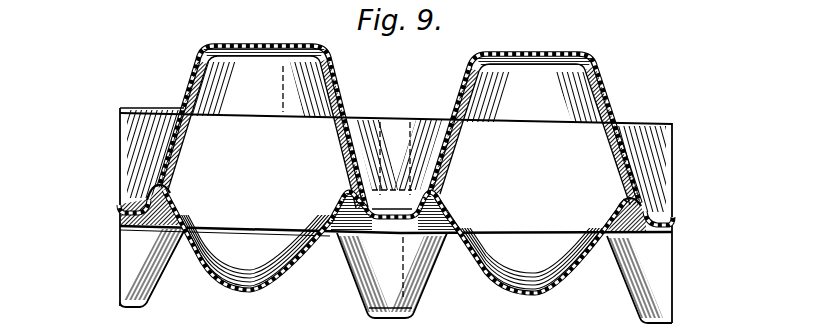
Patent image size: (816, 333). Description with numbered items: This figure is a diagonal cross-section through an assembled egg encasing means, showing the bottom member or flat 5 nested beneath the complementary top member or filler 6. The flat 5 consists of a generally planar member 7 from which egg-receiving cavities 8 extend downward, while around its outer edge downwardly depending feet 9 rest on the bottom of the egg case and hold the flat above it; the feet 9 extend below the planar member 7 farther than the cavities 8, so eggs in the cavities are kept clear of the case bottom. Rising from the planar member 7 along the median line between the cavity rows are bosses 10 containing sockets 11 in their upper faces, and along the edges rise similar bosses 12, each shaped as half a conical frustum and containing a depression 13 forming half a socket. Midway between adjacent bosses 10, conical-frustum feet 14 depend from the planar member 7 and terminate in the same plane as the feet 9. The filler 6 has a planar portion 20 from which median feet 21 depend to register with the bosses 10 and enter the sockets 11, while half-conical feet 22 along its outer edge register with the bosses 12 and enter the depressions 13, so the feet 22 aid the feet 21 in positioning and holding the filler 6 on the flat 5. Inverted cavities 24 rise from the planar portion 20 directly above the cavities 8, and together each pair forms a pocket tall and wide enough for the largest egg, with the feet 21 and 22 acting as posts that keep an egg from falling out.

The flat 5 is at (210, 281).
The filler 6 is at (204, 47).
The planar member 7 is at (531, 231).
The cavities 8 is at (267, 273).
The feet 9 is at (125, 275).
The bosses 10 is at (452, 210).
The sockets 11 is at (343, 204).
The bosses 12 is at (163, 186).
The depression 13 is at (125, 216).
The feet 14 is at (407, 293).
The planar portion 20 is at (521, 128).
The feet 21 is at (438, 153).
The feet 22 is at (147, 160).
The inverted cavities 24 is at (258, 44).